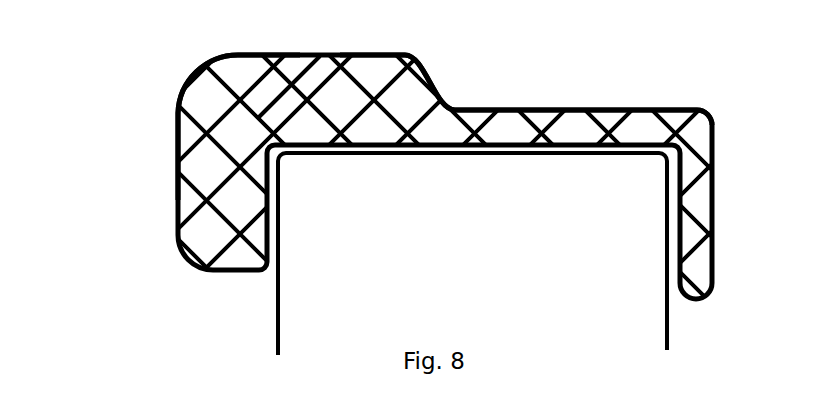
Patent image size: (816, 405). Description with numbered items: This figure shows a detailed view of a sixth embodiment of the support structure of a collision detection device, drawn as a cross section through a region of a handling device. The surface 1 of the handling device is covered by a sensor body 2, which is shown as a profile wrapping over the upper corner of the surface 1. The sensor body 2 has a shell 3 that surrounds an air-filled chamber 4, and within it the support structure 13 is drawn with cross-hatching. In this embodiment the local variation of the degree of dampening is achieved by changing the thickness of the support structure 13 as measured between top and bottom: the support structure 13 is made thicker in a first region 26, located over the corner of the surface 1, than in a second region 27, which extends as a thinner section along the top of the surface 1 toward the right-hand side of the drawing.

The surface 1 is at (358, 158).
The sensor body 2 is at (102, 198).
The shell 3 is at (183, 93).
The air-filled chamber 4 is at (243, 78).
The support structure 13 is at (292, 78).
The first region 26 is at (371, 38).
The second region 27 is at (561, 83).